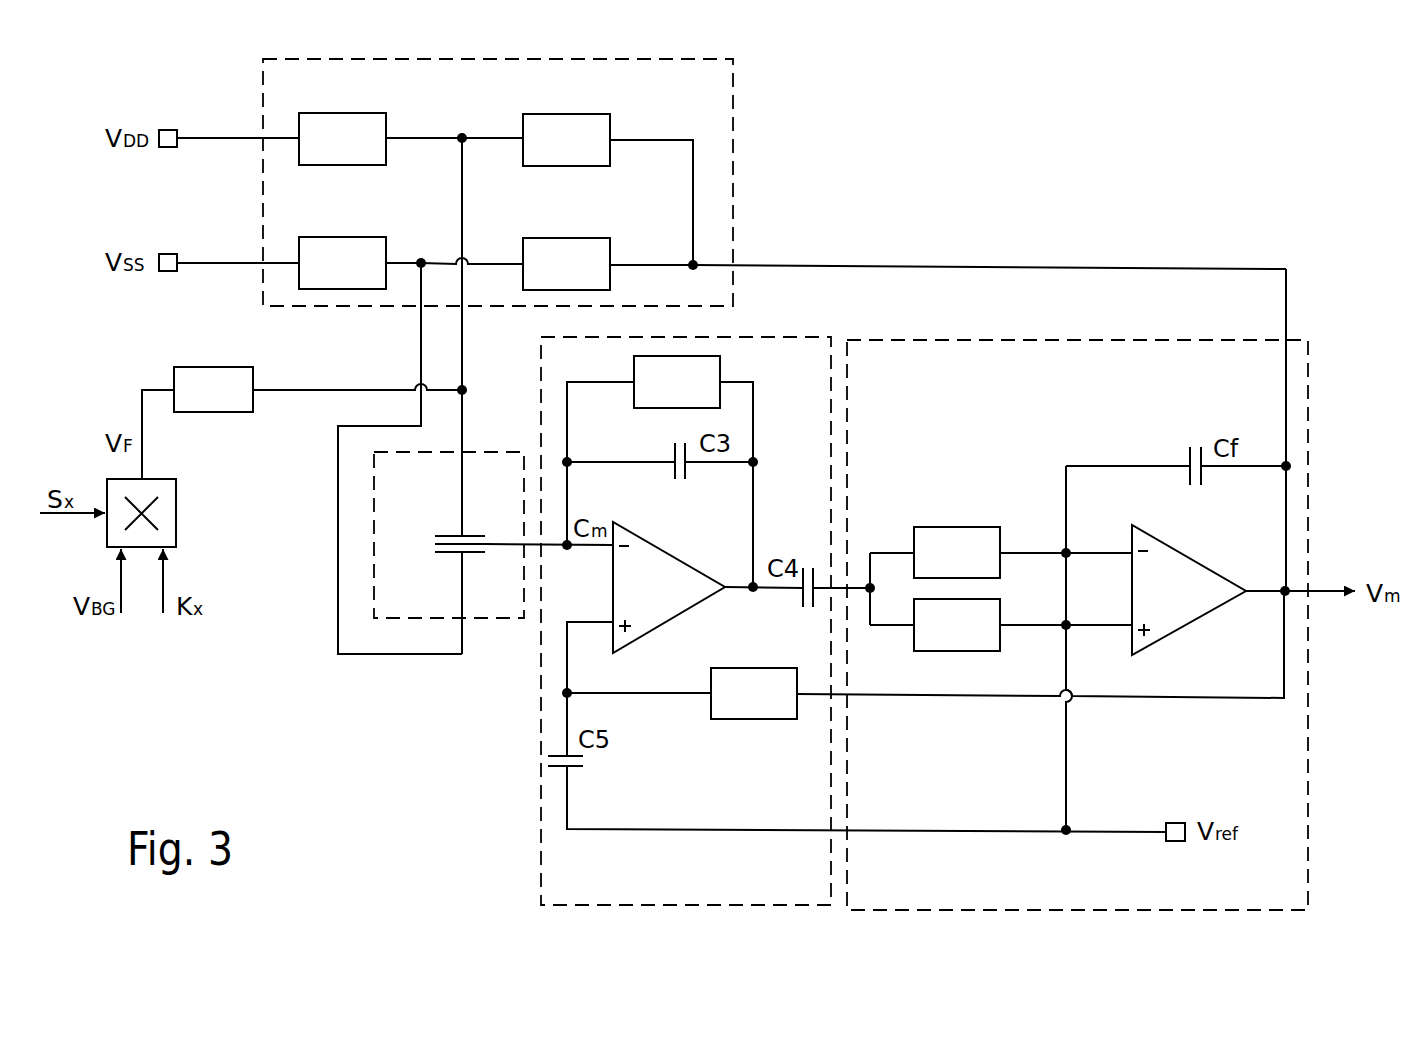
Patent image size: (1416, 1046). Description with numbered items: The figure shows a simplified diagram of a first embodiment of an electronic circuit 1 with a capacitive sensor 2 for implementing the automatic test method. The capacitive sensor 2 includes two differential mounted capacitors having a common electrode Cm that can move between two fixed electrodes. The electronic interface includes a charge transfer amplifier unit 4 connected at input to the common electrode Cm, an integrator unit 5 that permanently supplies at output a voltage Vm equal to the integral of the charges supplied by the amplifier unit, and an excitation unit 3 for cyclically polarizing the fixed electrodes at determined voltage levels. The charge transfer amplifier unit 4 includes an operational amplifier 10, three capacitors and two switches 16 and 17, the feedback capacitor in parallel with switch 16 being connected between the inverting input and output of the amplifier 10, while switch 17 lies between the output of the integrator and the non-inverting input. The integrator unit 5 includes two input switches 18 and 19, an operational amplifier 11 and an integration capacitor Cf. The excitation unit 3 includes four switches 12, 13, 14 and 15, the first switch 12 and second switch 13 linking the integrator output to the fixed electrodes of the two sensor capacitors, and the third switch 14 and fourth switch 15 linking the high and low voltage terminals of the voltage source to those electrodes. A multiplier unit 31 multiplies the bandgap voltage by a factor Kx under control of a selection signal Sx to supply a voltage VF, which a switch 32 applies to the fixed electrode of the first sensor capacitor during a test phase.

The electronic circuit 1 is at (1072, 221).
The capacitive sensor 2 is at (419, 623).
The excitation unit 3 is at (724, 89).
The charge transfer amplifier unit 4 is at (789, 337).
The integrator unit 5 is at (1196, 346).
The operational amplifier 10 is at (672, 603).
The operational amplifier 11 is at (1210, 597).
The first switch 12 is at (593, 122).
The second switch 13 is at (593, 248).
The third switch 14 is at (308, 125).
The fourth switch 15 is at (350, 289).
The switch 16 is at (720, 372).
The switch 17 is at (763, 719).
The input switch 18 is at (966, 652).
The input switch 19 is at (957, 527).
The multiplier unit 31 is at (168, 517).
The switch 32 is at (207, 412).